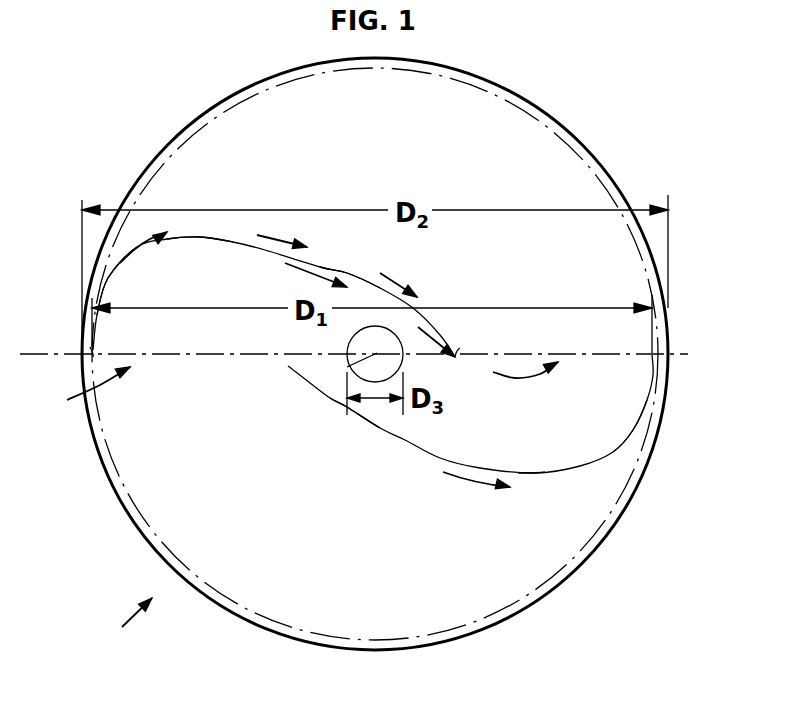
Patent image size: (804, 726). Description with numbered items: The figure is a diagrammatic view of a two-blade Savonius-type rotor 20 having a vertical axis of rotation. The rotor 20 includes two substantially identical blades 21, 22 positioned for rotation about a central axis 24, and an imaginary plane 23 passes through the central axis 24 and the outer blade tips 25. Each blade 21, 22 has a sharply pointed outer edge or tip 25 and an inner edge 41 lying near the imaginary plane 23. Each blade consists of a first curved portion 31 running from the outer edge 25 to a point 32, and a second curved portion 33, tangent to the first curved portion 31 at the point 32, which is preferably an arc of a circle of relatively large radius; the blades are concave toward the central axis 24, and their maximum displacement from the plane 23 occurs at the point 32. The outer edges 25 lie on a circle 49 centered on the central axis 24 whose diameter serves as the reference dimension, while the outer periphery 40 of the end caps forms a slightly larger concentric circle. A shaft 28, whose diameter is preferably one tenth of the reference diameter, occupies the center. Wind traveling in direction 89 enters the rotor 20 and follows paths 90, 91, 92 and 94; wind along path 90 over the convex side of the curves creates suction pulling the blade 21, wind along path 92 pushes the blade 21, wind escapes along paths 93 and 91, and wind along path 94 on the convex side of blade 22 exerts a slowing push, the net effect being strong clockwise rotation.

The two-blade Savonius-type rotor 20 is at (121, 622).
The blade 21 is at (222, 245).
The blade 22 is at (405, 440).
The imaginary plane 23 is at (190, 356).
The central axis 24 is at (344, 367).
The outer edge or tip 25 is at (87, 353).
The shaft 28 is at (352, 341).
The first curved portion 31 is at (108, 280).
The point 32 is at (200, 237).
The second curved portion 33 is at (350, 272).
The outer periphery 40 is at (520, 95).
The inner edge 41 is at (460, 346).
The circle 49 is at (247, 97).
The wind direction 89 is at (78, 395).
The wind path 90 is at (135, 250).
The wind path 91 is at (515, 378).
The wind path 92 is at (298, 268).
The wind path 93 is at (430, 337).
The wind path 94 is at (473, 484).